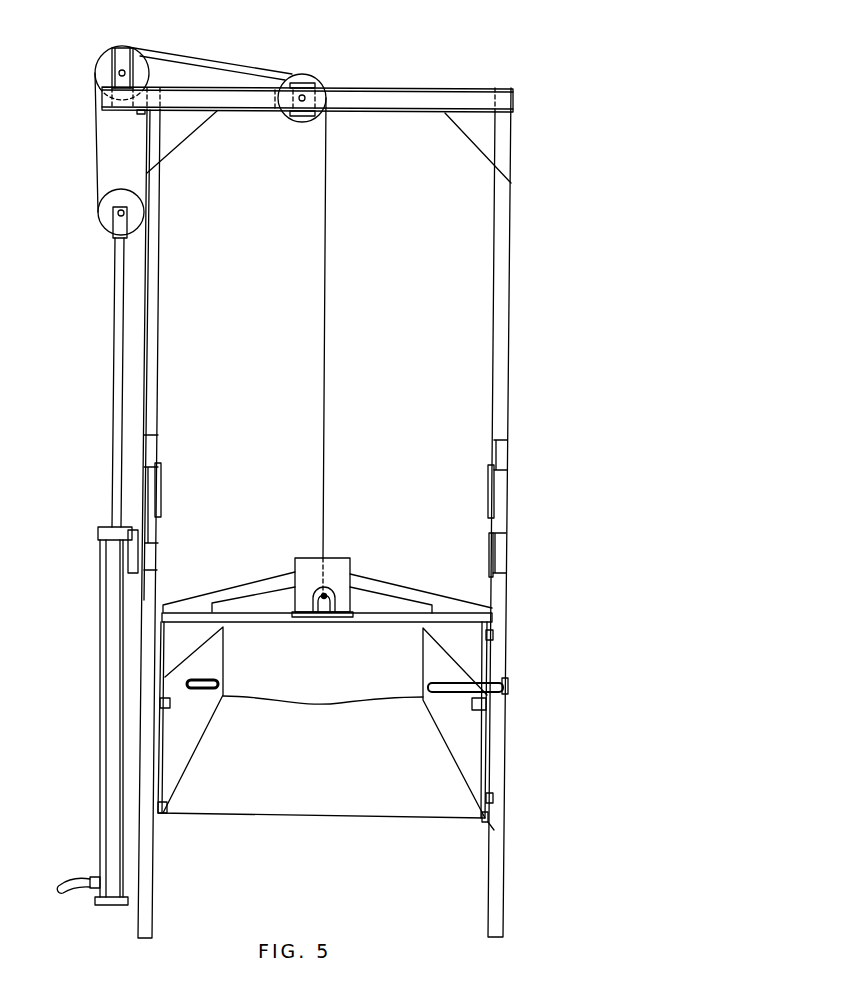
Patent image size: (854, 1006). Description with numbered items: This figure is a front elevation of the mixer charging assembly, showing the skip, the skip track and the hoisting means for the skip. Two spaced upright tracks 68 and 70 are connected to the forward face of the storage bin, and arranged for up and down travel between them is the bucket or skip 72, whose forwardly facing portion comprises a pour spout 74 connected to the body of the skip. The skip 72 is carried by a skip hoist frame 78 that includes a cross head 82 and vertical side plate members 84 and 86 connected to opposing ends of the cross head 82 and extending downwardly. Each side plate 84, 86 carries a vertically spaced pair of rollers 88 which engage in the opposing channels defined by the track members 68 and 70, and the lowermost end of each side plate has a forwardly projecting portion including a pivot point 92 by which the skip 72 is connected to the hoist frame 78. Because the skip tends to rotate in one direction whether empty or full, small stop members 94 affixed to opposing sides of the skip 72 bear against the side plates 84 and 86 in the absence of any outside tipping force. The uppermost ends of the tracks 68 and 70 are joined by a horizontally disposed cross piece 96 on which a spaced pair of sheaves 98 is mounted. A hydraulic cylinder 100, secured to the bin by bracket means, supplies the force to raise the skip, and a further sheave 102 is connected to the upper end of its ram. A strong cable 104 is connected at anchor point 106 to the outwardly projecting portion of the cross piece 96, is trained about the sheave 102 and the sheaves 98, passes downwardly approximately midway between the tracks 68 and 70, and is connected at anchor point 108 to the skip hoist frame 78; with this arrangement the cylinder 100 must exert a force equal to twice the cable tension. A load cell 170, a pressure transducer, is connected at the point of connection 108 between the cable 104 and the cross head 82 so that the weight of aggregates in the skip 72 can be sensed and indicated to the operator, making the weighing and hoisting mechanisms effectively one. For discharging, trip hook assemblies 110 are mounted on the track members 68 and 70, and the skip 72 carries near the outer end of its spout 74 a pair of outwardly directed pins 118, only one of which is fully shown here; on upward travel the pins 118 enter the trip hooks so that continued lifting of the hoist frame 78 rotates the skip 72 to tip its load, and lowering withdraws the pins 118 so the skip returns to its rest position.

The upright track 68 is at (160, 317).
The upright track 70 is at (492, 276).
The skip 72 is at (363, 798).
The pour spout 74 is at (232, 698).
The skip hoist frame 78 is at (388, 568).
The cross head 82 is at (362, 616).
The side plate member 84 is at (162, 638).
The side plate member 86 is at (490, 662).
The rollers 88 is at (493, 632).
The pivot point 92 is at (167, 813).
The stop member 94 is at (170, 703).
The cross piece 96 is at (415, 96).
The sheaves 98 is at (292, 72).
The hydraulic cylinder 100 is at (112, 712).
The sheave 102 is at (113, 228).
The cable 104 is at (99, 165).
The anchor point 106 is at (142, 112).
The anchor point 108 is at (317, 603).
The trip hook assembly 110 is at (506, 488).
The pin 118 is at (506, 688).
The load cell 170 is at (325, 590).